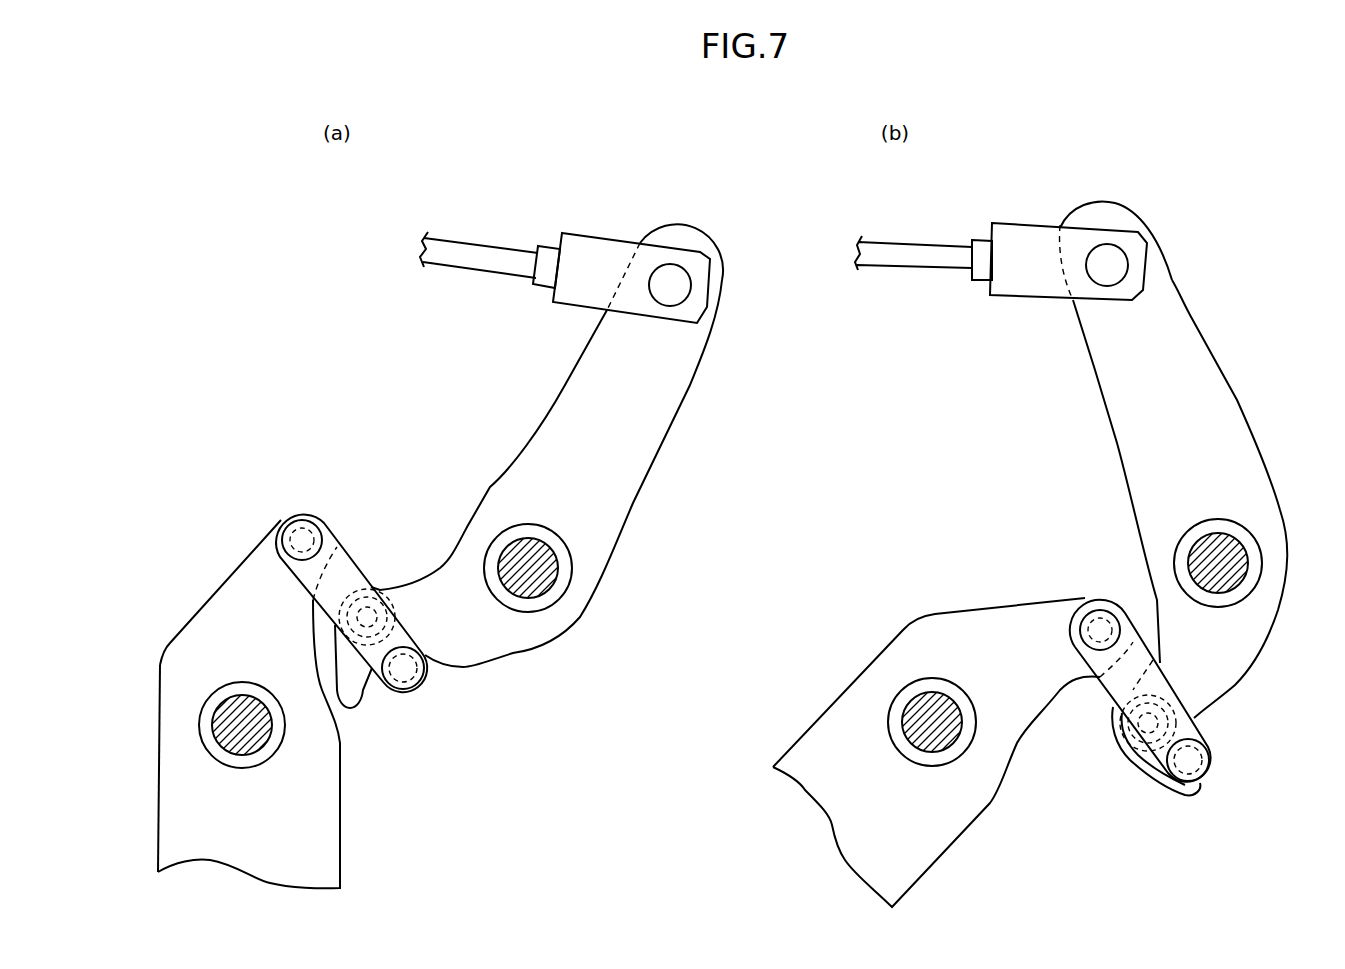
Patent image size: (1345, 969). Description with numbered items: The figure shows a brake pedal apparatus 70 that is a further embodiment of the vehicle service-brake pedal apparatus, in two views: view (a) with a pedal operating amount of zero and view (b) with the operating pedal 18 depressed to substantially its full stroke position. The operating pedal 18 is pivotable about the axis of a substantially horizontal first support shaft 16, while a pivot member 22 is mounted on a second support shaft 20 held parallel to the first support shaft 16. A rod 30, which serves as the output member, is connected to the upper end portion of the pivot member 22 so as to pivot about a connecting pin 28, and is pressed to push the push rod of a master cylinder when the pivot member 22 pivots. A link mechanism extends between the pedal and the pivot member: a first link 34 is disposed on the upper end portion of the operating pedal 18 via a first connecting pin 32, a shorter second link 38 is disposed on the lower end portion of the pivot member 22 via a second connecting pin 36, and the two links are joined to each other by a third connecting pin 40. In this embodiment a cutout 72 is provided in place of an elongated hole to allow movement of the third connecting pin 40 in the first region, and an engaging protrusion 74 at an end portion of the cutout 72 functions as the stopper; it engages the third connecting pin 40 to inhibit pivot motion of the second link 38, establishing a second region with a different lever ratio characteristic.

The first support shaft 16 is at (227, 713).
The operating pedal 18 is at (323, 858).
The second support shaft 20 is at (540, 585).
The pivot member 22 is at (637, 503).
The connecting pin 28 is at (680, 287).
The rod 30 is at (455, 258).
The first connecting pin 32 is at (302, 540).
The first link 34 is at (345, 563).
The second connecting pin 36 is at (390, 597).
The second link 38 is at (1143, 753).
The third connecting pin 40 is at (403, 667).
The brake pedal apparatus 70 is at (354, 280).
The cutout 72 is at (383, 693).
The engaging protrusion 74 is at (362, 702).